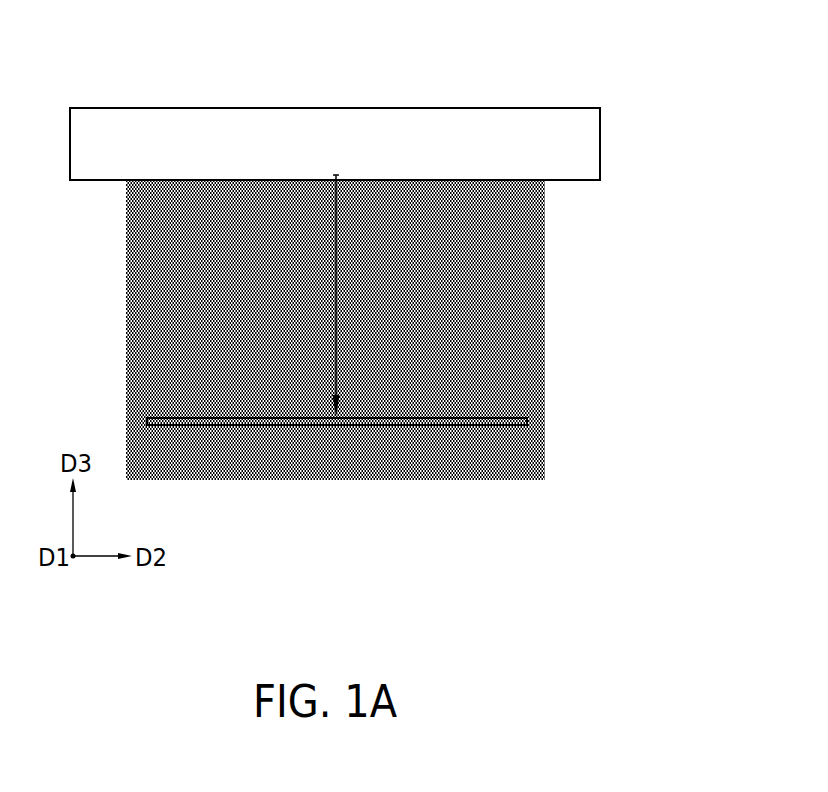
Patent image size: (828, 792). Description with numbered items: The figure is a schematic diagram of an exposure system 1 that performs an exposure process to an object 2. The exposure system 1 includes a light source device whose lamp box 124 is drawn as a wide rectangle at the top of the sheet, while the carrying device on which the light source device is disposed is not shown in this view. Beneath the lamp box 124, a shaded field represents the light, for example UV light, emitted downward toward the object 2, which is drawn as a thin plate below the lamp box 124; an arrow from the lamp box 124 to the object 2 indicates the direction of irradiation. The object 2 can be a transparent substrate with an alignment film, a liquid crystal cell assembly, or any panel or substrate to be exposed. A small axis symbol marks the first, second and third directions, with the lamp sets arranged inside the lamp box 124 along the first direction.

The exposure system 1 is at (390, 250).
The lamp box 124 is at (583, 143).
The object 2 is at (527, 421).